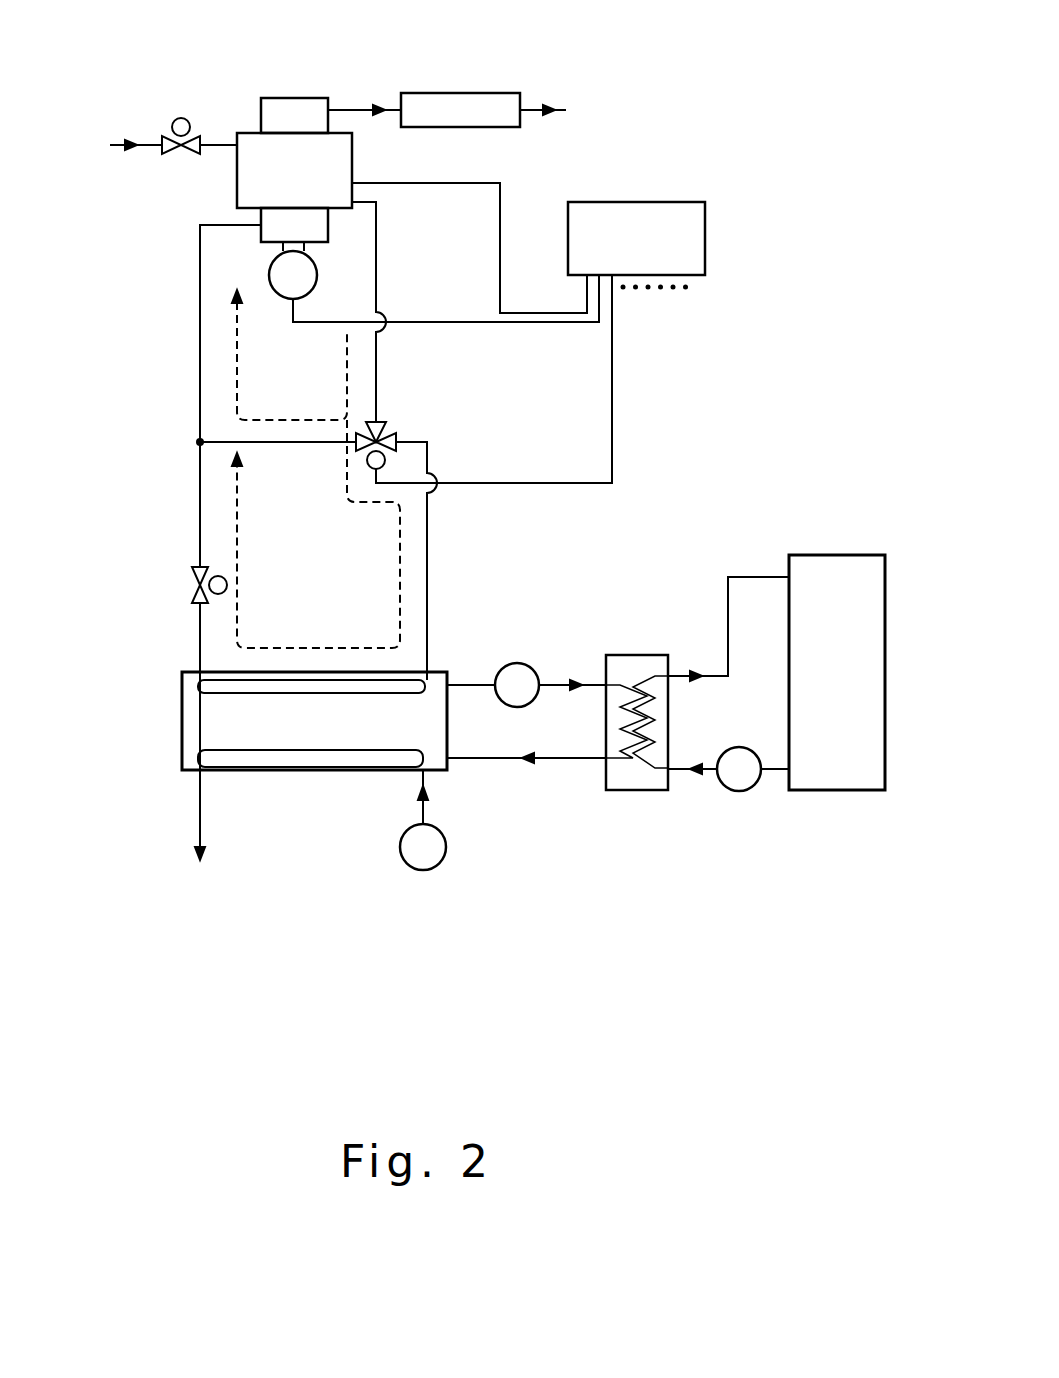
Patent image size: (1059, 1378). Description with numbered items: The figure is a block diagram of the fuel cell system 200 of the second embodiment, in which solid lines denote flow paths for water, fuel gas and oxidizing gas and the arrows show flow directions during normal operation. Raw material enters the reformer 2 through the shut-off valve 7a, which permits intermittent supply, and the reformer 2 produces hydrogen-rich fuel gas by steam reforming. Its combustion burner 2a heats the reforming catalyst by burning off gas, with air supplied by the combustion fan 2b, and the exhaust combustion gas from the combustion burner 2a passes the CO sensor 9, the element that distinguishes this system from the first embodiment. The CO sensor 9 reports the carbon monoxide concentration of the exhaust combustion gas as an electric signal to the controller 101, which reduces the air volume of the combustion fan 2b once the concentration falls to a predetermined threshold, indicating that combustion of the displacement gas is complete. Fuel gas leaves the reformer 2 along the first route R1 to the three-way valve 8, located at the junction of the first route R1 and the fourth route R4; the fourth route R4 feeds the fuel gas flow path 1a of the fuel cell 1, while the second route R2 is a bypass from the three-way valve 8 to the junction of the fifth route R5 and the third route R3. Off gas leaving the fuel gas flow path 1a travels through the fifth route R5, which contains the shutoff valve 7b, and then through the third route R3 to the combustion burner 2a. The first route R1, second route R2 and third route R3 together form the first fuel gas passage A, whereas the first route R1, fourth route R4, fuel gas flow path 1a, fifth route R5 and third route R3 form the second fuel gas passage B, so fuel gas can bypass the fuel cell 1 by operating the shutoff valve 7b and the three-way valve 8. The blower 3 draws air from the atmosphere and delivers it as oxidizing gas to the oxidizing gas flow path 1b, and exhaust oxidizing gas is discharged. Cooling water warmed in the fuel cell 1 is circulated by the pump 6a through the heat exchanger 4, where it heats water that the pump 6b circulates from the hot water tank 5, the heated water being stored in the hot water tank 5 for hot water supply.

The fuel cell system 200 is at (788, 85).
The fuel cell 1 is at (285, 721).
The fuel gas flow path 1a is at (235, 695).
The oxidizing gas flow path 1b is at (396, 749).
The reformer 2 is at (353, 156).
The combustion burner 2a is at (329, 221).
The combustion fan 2b is at (269, 282).
The blower 3 is at (448, 855).
The heat exchanger 4 is at (628, 654).
The hot water tank 5 is at (829, 554).
The pump 6a is at (522, 661).
The pump 6b is at (739, 794).
The shut-off valve 7a is at (163, 136).
The shutoff valve 7b is at (192, 597).
The three-way valve 8 is at (388, 425).
The CO sensor 9 is at (457, 92).
The controller 101 is at (706, 215).
The first route R1 is at (377, 283).
The second route R2 is at (283, 444).
The third route R3 is at (199, 398).
The fourth route R4 is at (427, 555).
The fifth route R5 is at (199, 508).
The first fuel gas passage A is at (290, 418).
The second fuel gas passage B is at (319, 646).